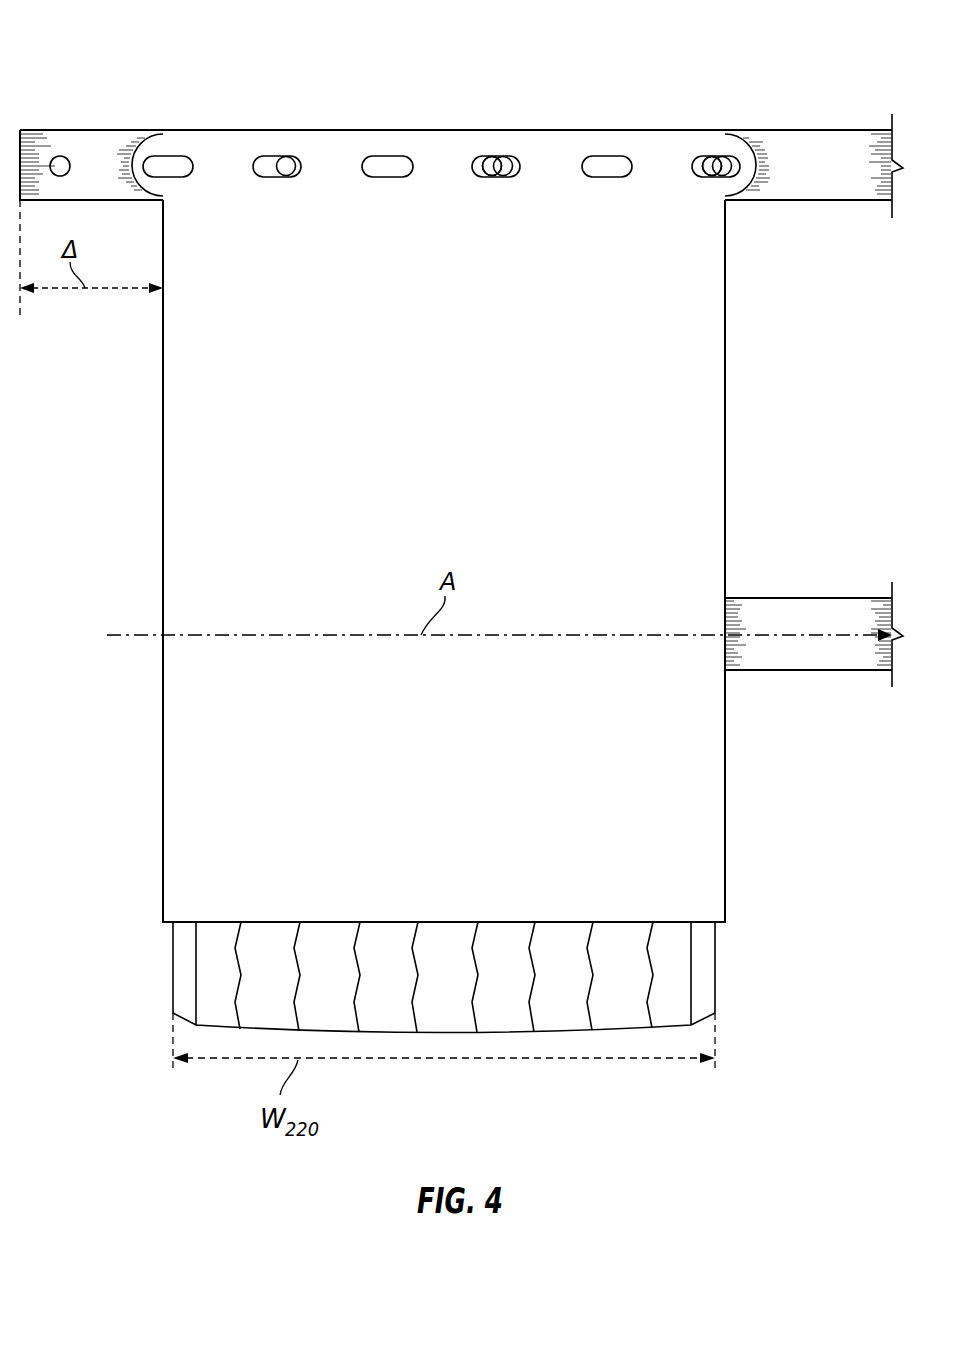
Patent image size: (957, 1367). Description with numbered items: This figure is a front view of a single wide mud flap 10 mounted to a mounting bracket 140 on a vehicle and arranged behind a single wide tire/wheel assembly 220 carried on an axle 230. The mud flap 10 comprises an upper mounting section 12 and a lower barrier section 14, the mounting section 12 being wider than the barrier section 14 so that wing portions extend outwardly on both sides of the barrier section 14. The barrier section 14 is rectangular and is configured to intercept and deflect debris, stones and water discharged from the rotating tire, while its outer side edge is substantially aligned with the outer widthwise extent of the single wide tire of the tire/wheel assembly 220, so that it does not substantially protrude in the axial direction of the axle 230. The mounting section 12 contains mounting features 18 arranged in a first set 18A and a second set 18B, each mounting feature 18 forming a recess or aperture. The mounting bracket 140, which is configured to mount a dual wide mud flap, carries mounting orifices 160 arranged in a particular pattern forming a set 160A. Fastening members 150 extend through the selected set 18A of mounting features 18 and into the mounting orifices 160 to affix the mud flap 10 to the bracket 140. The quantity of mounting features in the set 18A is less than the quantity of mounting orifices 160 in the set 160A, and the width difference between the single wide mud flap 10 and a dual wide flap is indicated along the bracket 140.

The single wide mud flap 10 is at (725, 568).
The mounting section 12 is at (213, 148).
The barrier section 14 is at (178, 493).
The mounting features 18 is at (417, 133).
The first set of mounting features 18A is at (268, 157).
The second set of mounting features 18B is at (168, 157).
The mounting bracket 140 is at (797, 130).
The fastening members 150 is at (497, 163).
The mounting orifices 160 is at (373, 182).
The set of mounting orifices 160A is at (60, 156).
The single wide tire/wheel assembly 220 is at (715, 955).
The axle 230 is at (838, 598).